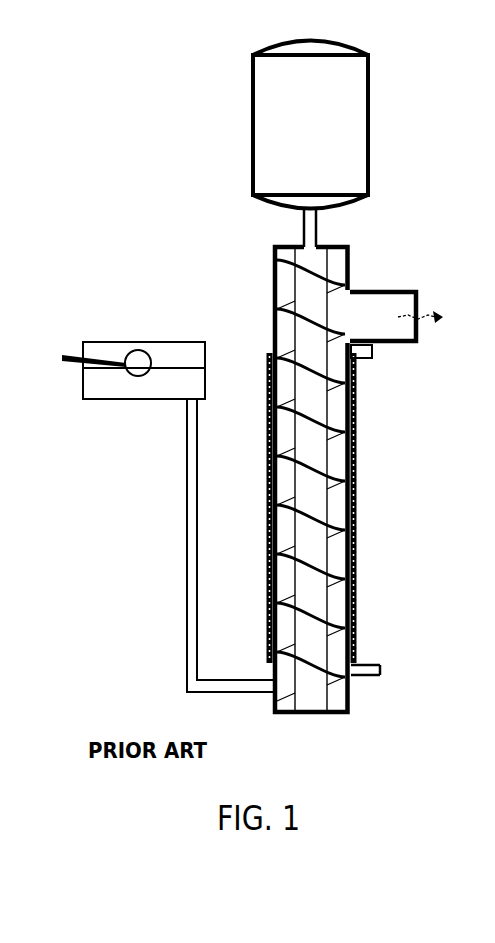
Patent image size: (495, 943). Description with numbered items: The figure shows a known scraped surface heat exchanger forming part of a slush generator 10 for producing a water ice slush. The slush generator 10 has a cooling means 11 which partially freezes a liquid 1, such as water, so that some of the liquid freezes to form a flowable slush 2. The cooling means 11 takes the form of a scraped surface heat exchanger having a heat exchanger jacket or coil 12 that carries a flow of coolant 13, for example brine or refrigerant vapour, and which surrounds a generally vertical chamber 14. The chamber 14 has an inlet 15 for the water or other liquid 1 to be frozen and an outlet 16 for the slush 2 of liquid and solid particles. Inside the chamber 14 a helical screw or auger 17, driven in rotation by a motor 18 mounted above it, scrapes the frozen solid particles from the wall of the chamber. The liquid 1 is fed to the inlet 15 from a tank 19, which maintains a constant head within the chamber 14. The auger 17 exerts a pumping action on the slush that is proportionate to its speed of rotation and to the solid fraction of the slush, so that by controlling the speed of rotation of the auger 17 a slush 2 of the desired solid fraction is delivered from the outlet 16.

The slush generator 10 is at (166, 184).
The motor 18 is at (368, 183).
The helical screw or auger 17 is at (350, 275).
The outlet 16 is at (417, 290).
The flowable slush 2 is at (432, 320).
The coolant 13 is at (376, 357).
The cooling means 11 is at (387, 427).
The chamber 14 is at (362, 505).
The heat exchanger jacket or coil 12 is at (357, 556).
The inlet 15 is at (254, 690).
The tank 19 is at (159, 342).
The liquid 1 is at (122, 389).